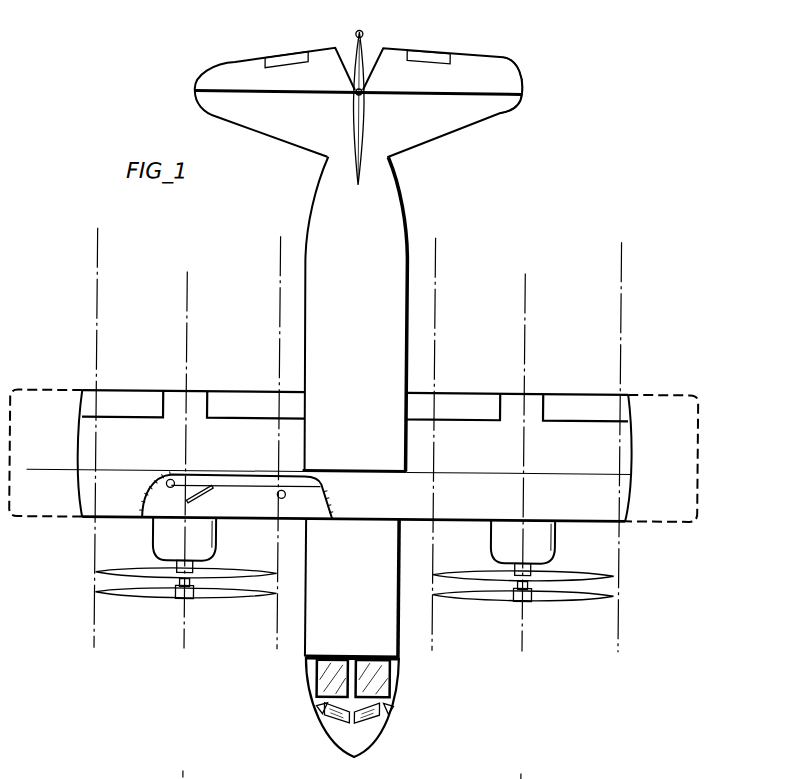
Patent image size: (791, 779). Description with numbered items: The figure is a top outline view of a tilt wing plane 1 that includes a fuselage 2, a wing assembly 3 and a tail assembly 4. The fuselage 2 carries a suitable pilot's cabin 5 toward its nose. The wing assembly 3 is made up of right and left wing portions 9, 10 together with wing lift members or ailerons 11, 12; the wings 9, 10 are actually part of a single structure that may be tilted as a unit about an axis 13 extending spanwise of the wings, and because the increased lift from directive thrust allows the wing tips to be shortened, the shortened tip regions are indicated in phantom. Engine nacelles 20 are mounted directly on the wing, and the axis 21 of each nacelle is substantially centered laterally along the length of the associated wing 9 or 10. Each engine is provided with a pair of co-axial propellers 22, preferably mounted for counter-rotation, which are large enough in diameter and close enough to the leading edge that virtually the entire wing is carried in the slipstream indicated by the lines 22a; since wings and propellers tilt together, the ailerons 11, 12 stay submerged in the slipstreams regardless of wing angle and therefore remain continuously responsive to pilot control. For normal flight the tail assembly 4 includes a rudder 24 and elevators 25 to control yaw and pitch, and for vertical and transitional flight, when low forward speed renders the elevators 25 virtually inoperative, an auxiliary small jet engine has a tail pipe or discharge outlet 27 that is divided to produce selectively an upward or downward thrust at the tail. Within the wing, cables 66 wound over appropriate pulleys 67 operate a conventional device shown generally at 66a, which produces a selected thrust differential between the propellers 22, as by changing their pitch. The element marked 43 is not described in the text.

The tilt wing plane 1 is at (447, 289).
The fuselage 2 is at (367, 315).
The wing assembly 3 is at (226, 463).
The tail assembly 4 is at (414, 38).
The pilot's cabin 5 is at (384, 681).
The wing portion 9 is at (83, 448).
The wing portion 10 is at (629, 466).
The aileron 11 is at (127, 397).
The aileron 12 is at (474, 402).
The axis 13 is at (65, 475).
The right wing tip hinge 43 is at (637, 476).
The engine nacelle 20 is at (155, 531).
The axis 21 is at (188, 300).
The propeller 22 is at (160, 596).
The slipstream lines 22a is at (92, 614).
The rudder 24 is at (366, 52).
The elevators 25 is at (502, 49).
The tail pipe or discharge outlet 27 is at (355, 37).
The cables 66 is at (264, 491).
The thrust differential device 66a is at (212, 490).
The pulleys 67 is at (167, 486).